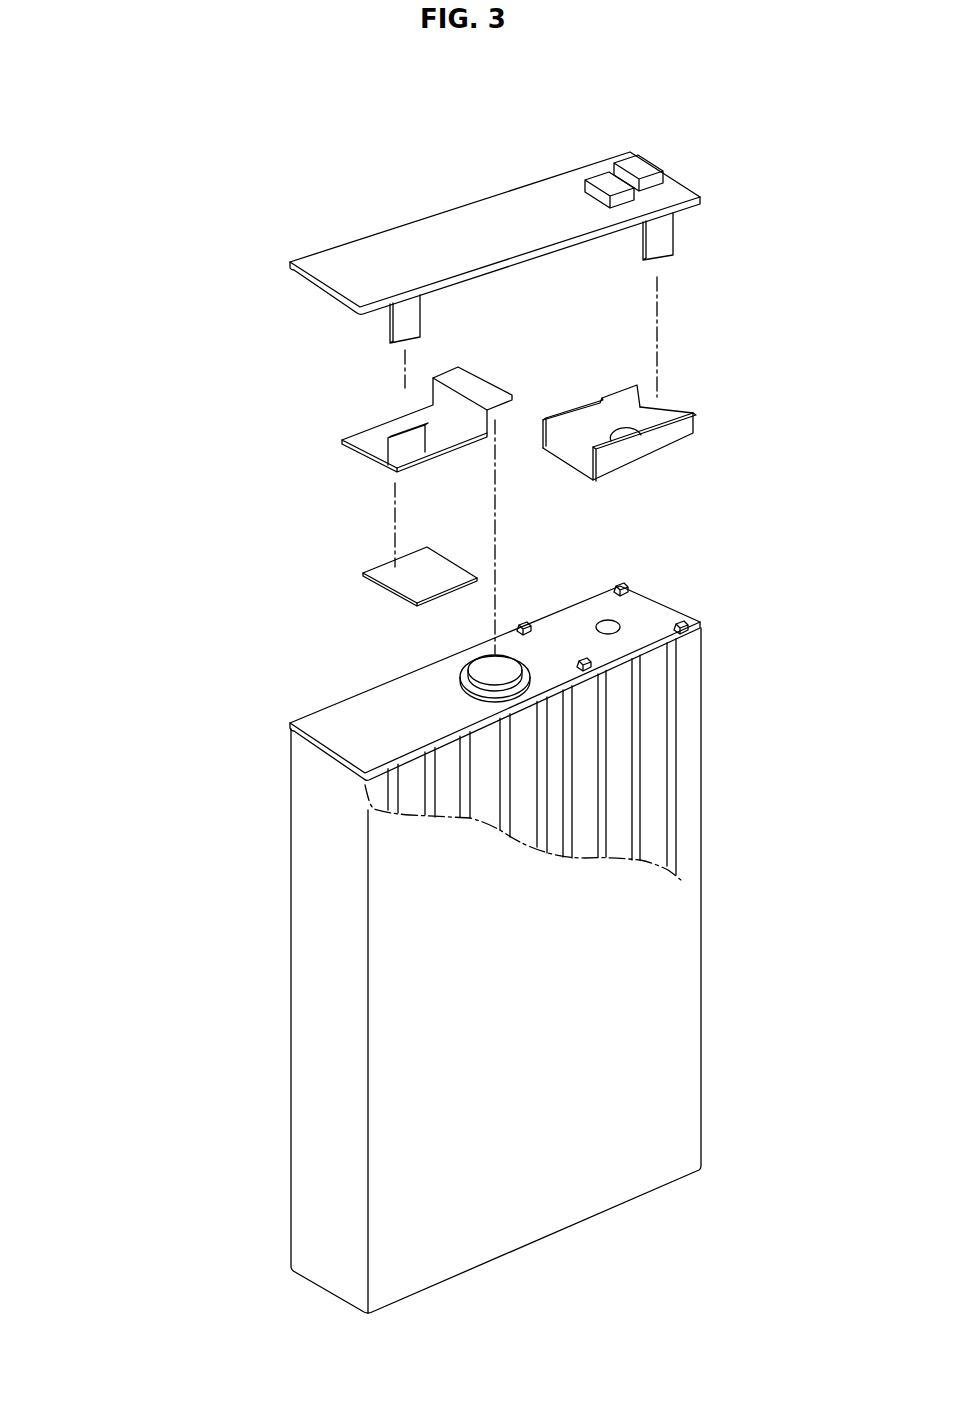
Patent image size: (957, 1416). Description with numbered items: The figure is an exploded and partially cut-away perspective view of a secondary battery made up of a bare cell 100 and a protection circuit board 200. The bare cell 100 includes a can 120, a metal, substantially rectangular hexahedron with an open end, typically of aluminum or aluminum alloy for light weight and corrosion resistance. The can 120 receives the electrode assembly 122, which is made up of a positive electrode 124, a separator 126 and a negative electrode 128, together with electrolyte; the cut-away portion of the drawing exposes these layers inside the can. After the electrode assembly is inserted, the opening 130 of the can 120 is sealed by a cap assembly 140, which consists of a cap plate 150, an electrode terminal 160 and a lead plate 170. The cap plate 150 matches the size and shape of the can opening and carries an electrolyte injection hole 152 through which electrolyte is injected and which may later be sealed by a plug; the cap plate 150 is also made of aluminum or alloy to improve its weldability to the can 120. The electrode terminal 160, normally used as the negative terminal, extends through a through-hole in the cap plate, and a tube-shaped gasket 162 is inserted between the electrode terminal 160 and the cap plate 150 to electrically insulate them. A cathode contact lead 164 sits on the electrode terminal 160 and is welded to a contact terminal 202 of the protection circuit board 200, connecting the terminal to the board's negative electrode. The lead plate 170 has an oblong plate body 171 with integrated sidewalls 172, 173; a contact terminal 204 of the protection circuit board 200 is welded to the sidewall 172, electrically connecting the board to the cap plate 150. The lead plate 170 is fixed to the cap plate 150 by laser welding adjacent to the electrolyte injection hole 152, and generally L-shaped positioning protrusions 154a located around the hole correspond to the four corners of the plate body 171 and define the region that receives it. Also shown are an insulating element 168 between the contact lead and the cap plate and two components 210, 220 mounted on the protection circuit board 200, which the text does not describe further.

The bare cell 100 is at (232, 816).
The can 120 is at (683, 1040).
The electrode assembly 122 is at (667, 768).
The positive electrode 124 is at (690, 732).
The separator 126 is at (640, 800).
The negative electrode 128 is at (617, 827).
The opening 130 is at (320, 762).
The cap assembly 140 is at (696, 609).
The cap plate 150 is at (320, 718).
The electrolyte injection hole 152 is at (622, 627).
The positioning protrusion 154a is at (623, 585).
The electrode terminal 160 is at (487, 665).
The gasket 162 is at (467, 680).
The cathode contact lead 164 is at (373, 438).
The insulating plate 168 is at (383, 568).
The lead plate 170 is at (672, 385).
The plate body 171 is at (590, 437).
The sidewall 172 is at (685, 433).
The sidewall 173 is at (553, 433).
The protection circuit board 200 is at (363, 243).
The contact terminal 202 is at (407, 320).
The contact terminal 204 is at (667, 240).
The protection circuit element 210 is at (643, 170).
The protection circuit element 220 is at (605, 178).